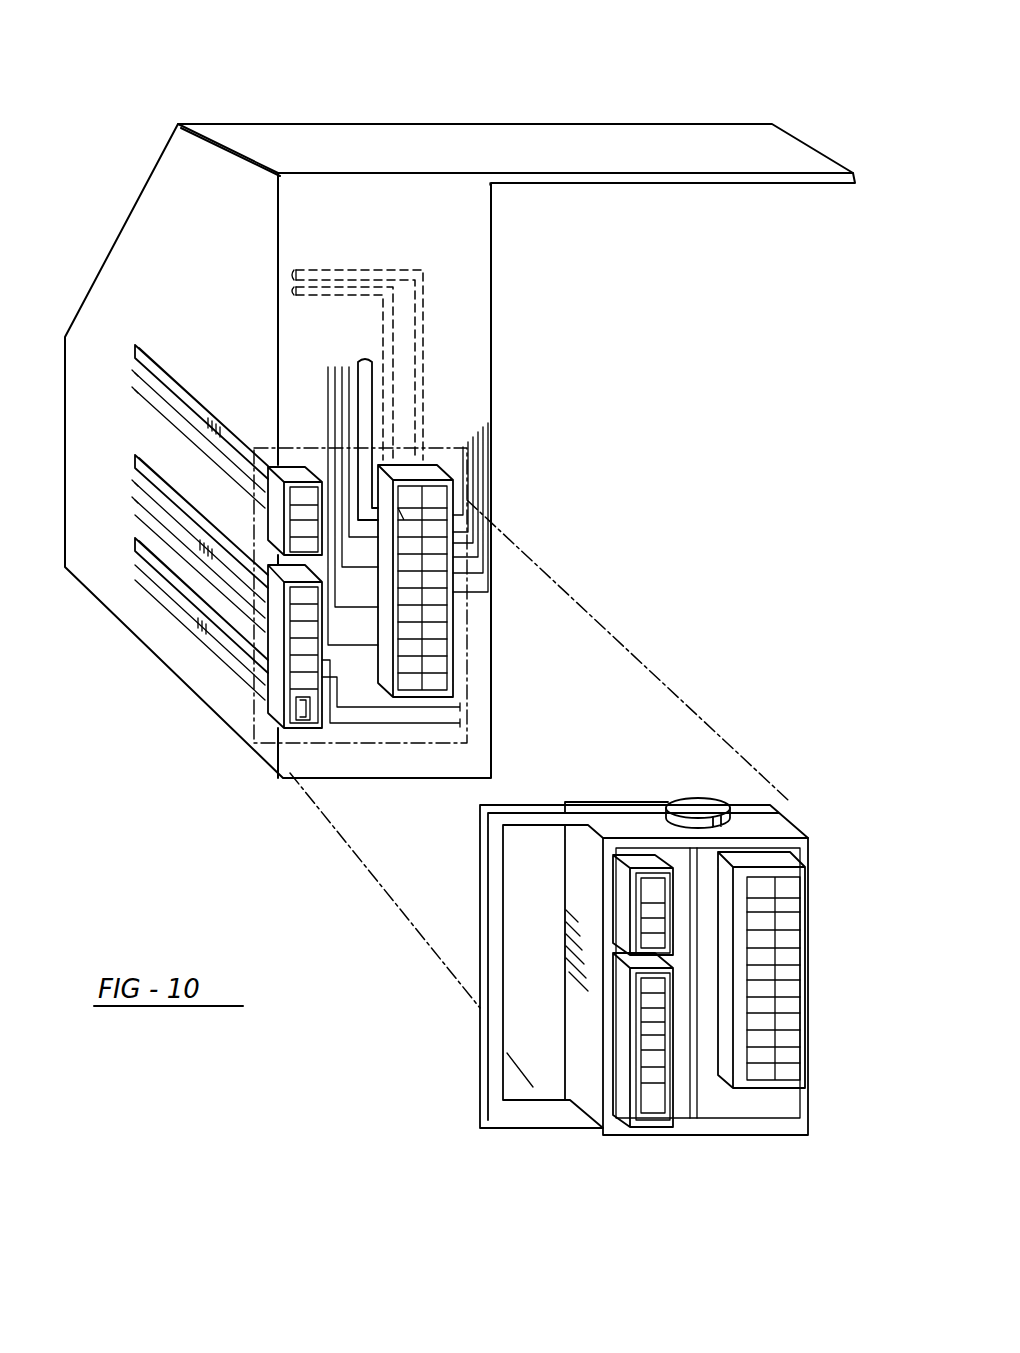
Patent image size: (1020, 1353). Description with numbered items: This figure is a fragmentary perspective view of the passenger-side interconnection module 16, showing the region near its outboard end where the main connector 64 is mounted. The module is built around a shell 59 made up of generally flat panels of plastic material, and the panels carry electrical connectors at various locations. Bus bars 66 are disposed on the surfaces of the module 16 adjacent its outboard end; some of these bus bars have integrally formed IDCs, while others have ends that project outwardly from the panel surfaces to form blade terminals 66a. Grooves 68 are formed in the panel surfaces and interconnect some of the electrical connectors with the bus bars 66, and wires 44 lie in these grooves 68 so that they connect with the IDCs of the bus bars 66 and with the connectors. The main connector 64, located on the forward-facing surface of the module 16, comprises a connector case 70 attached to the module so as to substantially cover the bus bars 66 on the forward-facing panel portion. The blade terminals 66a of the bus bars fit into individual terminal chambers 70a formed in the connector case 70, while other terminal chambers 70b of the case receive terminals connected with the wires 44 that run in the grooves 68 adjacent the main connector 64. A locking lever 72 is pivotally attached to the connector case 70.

The passenger-side interconnection module 16 is at (657, 116).
The shell 59 is at (503, 135).
The bus bars 66 is at (145, 340).
The grooves 68 is at (137, 455).
The wires 44 is at (395, 360).
The main connector 64 is at (441, 443).
The blade terminals 66a is at (298, 706).
The locking lever 72 is at (542, 816).
The connector case 70 is at (782, 816).
The terminal chambers 70a is at (652, 1110).
The terminal chambers 70b is at (797, 1047).